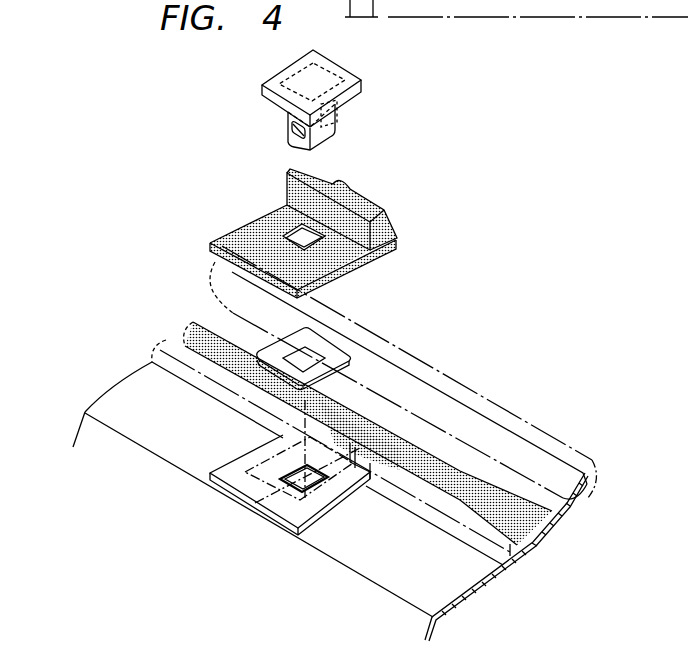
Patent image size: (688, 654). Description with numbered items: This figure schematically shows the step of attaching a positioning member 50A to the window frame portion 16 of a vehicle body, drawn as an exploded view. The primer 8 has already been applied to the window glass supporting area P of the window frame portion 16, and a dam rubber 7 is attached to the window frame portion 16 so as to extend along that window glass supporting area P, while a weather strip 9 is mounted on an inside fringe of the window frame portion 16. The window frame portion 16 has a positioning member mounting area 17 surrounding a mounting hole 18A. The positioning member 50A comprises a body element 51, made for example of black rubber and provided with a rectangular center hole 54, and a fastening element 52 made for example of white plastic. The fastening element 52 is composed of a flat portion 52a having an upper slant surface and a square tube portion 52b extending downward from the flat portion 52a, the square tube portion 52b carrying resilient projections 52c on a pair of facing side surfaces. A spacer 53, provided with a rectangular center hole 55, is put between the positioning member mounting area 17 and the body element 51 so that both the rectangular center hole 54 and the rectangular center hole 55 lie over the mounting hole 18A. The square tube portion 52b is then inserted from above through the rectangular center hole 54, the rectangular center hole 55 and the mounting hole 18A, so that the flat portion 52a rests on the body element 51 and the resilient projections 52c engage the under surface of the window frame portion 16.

The dam rubber 7 is at (437, 528).
The primer 8 is at (190, 333).
The weather strip 9 is at (514, 413).
The window frame portion 16 is at (473, 575).
The positioning member mounting area 17 is at (330, 497).
The mounting hole 18A is at (296, 481).
The positioning member 50A is at (414, 150).
The body element 51 is at (397, 233).
The fastening element 52 is at (366, 94).
The flat portion 52a is at (285, 69).
The square tube portion 52b is at (337, 136).
The resilient projections 52c is at (291, 129).
The spacer 53 is at (331, 345).
The rectangular center hole 54 is at (290, 228).
The rectangular center hole 55 is at (300, 355).
The window glass supporting area P is at (530, 511).